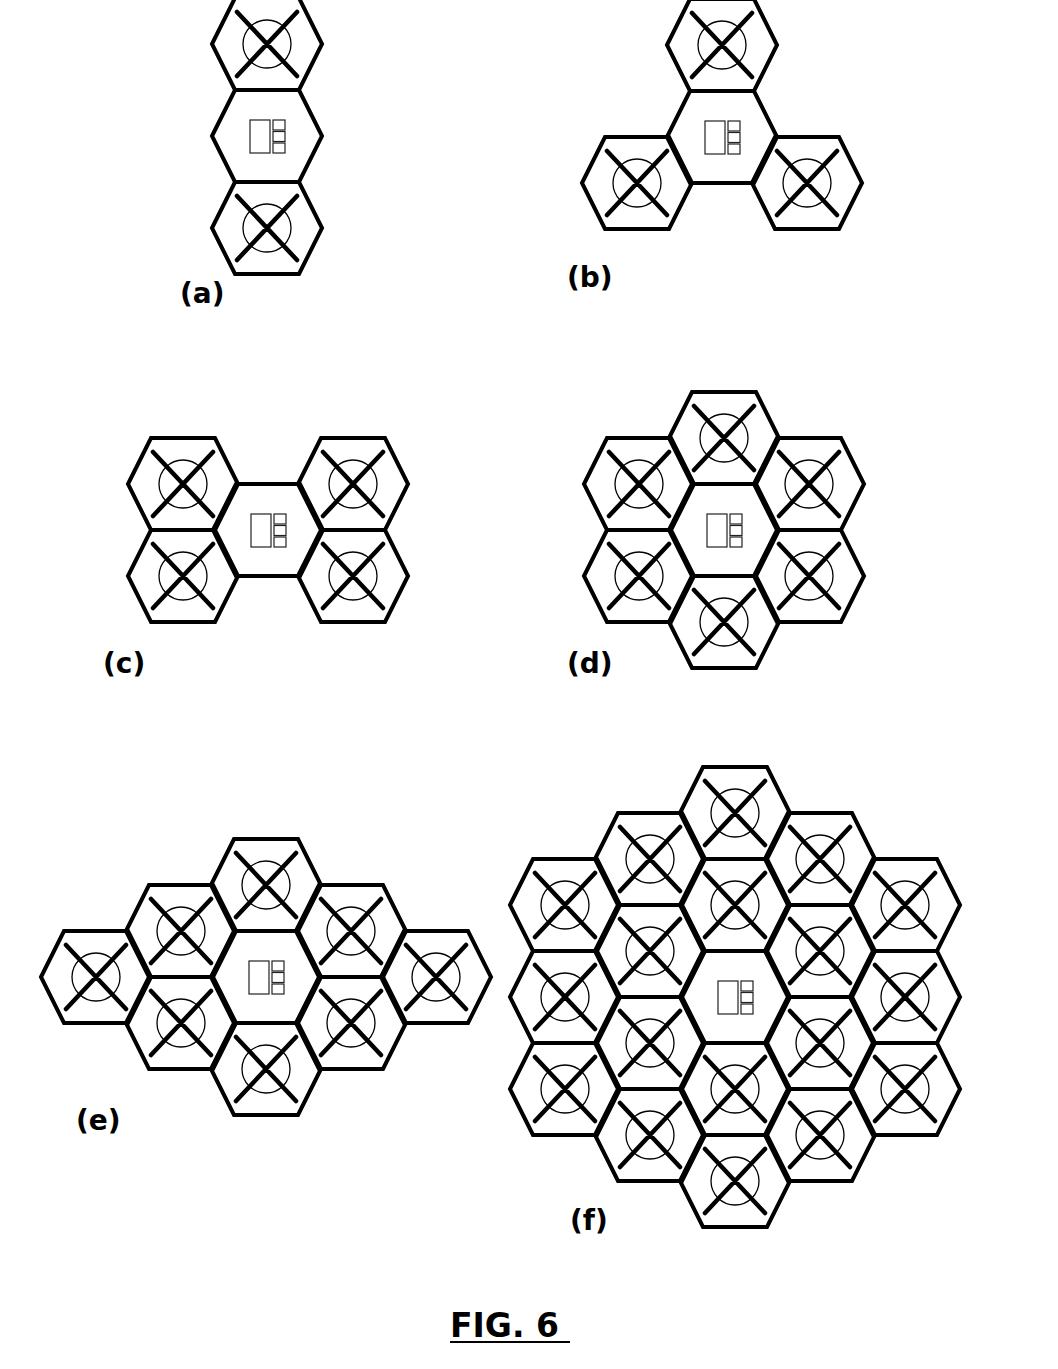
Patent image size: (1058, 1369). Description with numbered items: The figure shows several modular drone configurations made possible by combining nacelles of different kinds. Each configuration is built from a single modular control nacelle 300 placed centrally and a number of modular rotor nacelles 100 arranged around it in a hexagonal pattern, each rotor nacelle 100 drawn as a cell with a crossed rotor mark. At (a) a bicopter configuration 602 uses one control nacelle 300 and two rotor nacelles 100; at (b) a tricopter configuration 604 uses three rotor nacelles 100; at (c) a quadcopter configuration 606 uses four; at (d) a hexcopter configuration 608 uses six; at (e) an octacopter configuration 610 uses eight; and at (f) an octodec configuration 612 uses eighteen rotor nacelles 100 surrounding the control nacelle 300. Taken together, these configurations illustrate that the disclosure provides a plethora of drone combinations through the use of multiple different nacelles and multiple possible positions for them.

The modular rotor nacelle 100 is at (303, 50).
The modular control nacelle 300 is at (322, 137).
The bicopter configuration 602 is at (188, 82).
The tricopter configuration 604 is at (610, 97).
The quadcopter configuration 606 is at (128, 447).
The hexcopter configuration 608 is at (607, 417).
The octacopter configuration 610 is at (195, 853).
The octodec configuration 612 is at (573, 830).